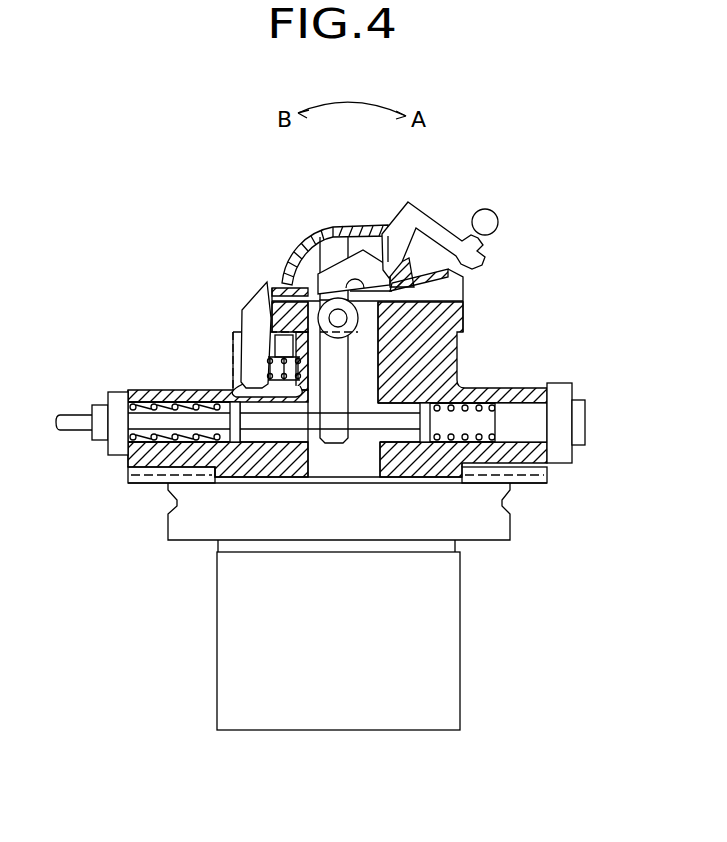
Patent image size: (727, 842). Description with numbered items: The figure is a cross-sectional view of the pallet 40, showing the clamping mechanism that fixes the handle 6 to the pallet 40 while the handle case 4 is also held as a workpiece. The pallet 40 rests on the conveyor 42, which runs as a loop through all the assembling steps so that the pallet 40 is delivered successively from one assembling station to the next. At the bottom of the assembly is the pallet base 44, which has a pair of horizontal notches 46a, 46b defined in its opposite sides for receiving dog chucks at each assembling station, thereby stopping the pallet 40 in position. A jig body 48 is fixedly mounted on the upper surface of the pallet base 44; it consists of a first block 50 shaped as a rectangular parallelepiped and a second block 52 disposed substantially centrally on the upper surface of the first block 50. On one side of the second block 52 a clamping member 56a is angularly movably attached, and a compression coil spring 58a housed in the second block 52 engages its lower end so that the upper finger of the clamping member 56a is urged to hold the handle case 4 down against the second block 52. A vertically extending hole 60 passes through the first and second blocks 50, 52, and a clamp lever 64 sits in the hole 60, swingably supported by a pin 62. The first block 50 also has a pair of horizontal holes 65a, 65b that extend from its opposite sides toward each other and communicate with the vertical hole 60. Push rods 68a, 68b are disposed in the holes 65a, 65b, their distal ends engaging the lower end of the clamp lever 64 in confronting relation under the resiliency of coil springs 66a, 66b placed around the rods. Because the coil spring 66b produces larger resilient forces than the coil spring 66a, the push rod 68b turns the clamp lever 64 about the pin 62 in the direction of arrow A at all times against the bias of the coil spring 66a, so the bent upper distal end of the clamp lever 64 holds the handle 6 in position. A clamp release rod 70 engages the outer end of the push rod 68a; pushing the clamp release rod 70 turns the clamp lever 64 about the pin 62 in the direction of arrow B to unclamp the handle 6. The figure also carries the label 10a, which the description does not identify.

The handle case 4 is at (352, 223).
The handle 6 is at (381, 238).
The rider figure 10a is at (418, 211).
The pallet 40 is at (589, 290).
The conveyor 42 is at (220, 622).
The pallet base 44 is at (488, 536).
The horizontal notch 46a is at (170, 498).
The horizontal notch 46b is at (507, 504).
The jig body 48 is at (475, 380).
The first block 50 is at (533, 387).
The second block 52 is at (463, 318).
The clamping member 56a is at (248, 305).
The compression coil spring 58a is at (268, 360).
The vertically extending hole 60 is at (372, 420).
The pin 62 is at (330, 229).
The clamp lever 64 is at (321, 272).
The horizontal hole 65a is at (177, 404).
The horizontal hole 65b is at (440, 443).
The coil spring 66a is at (131, 407).
The coil spring 66b is at (482, 442).
The push rod 68a is at (281, 422).
The push rod 68b is at (390, 420).
The clamp release rod 70 is at (71, 426).